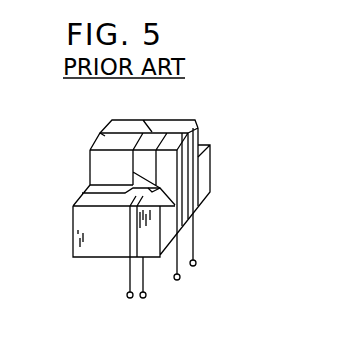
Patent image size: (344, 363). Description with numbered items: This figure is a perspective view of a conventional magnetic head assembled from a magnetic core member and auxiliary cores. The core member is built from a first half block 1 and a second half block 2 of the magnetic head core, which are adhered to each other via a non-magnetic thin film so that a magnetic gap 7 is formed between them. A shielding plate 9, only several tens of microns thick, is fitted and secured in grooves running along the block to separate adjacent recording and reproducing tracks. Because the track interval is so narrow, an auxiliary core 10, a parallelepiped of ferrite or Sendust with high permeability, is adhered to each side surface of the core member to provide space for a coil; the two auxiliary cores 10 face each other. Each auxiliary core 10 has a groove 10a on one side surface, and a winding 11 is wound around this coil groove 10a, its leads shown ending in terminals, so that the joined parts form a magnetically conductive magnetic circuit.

The first half block of the magnetic head core 1 is at (90, 160).
The second half block of the magnetic head core 2 is at (199, 125).
The magnetic gap 7 is at (142, 120).
The shielding plate 9 is at (105, 135).
The auxiliary core 10 is at (81, 226).
The groove 10a is at (160, 192).
The winding 11 is at (147, 273).